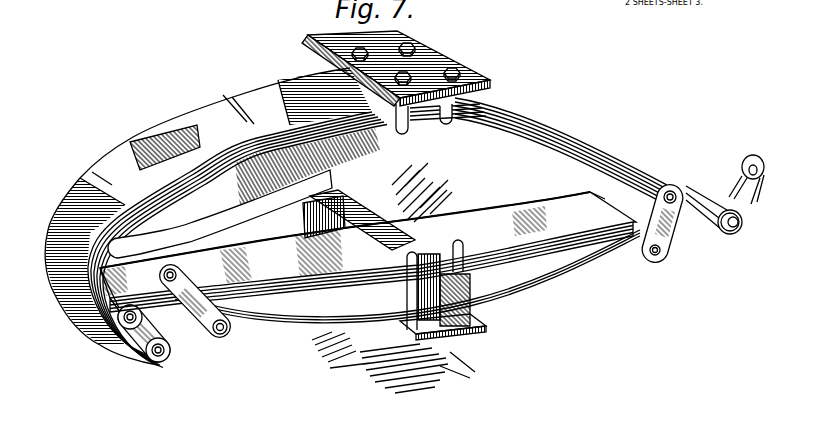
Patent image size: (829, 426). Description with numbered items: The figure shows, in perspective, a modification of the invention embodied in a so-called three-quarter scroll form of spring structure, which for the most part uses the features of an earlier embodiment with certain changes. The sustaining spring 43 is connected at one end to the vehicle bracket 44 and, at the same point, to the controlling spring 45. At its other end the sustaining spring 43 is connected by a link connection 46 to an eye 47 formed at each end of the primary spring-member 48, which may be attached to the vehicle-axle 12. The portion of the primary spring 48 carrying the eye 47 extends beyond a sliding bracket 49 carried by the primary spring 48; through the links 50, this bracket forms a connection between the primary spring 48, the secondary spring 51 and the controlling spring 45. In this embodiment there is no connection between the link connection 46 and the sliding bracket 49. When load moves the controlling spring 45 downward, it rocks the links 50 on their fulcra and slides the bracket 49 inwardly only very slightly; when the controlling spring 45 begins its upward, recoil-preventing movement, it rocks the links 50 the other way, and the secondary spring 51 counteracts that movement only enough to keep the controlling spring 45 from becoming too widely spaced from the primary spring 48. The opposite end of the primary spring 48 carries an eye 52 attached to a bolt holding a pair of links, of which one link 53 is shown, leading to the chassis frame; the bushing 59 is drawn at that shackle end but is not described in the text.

The vehicle-axle 12 is at (466, 326).
The sustaining spring 43 is at (250, 94).
The vehicle bracket 44 is at (421, 57).
The controlling spring 45 is at (542, 130).
The link connection 46 is at (167, 338).
The eye 47 is at (67, 313).
The primary spring-member 48 is at (480, 217).
The sliding bracket 49 is at (597, 188).
The links 50 is at (173, 268).
The secondary spring 51 is at (292, 312).
The eye 52 is at (734, 233).
The link 53 is at (743, 181).
The bushing eye 59 is at (741, 217).